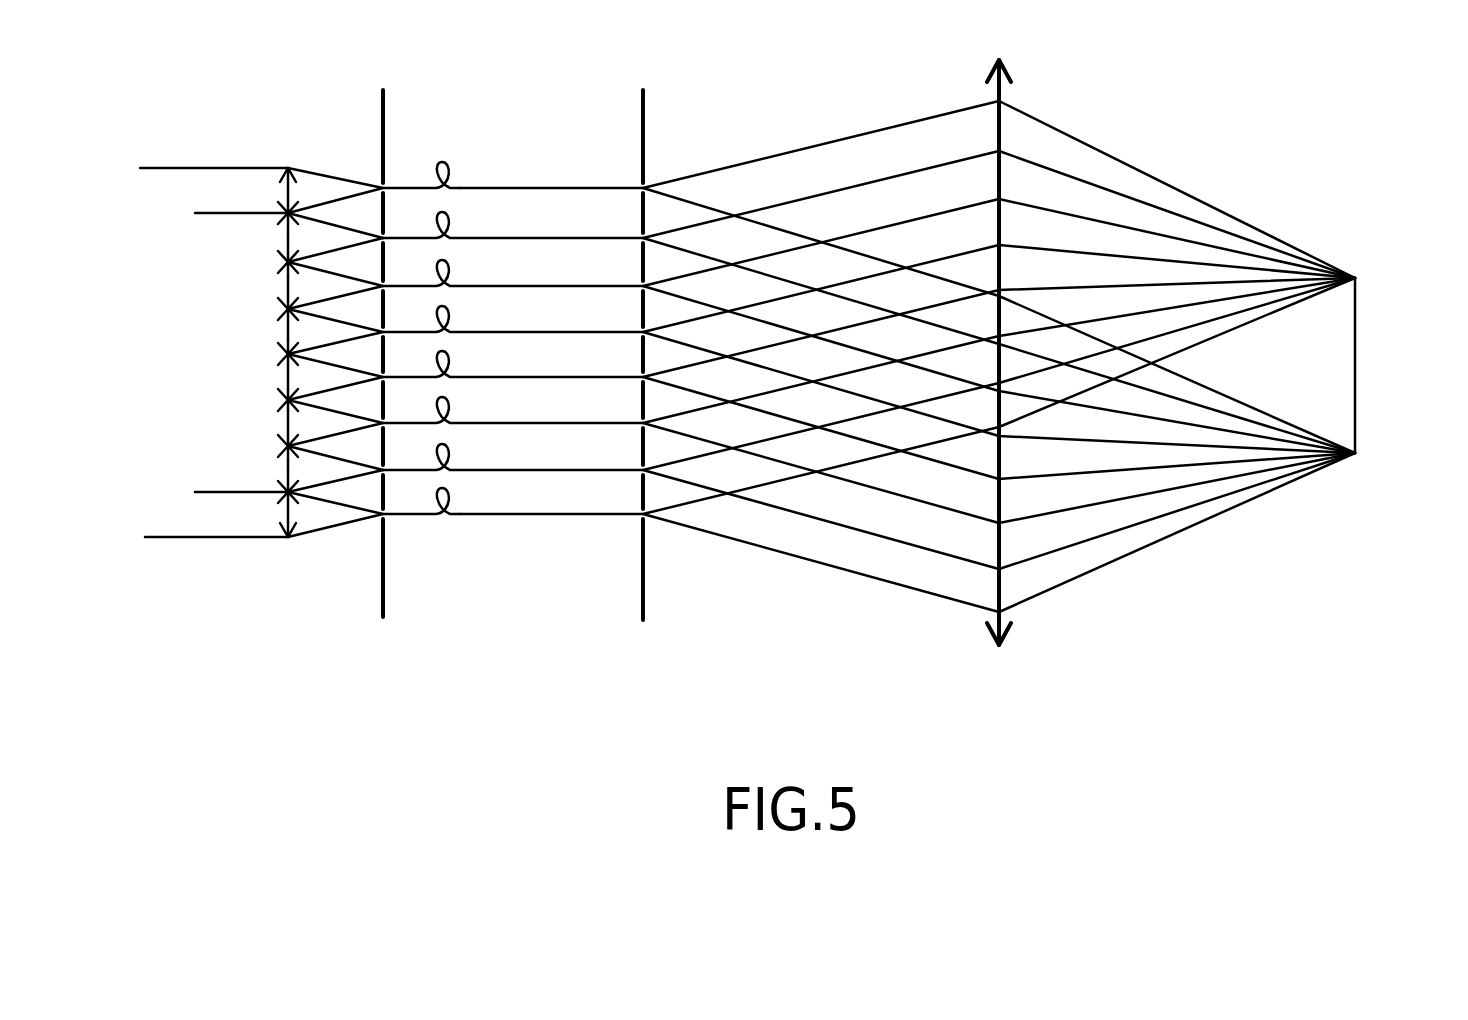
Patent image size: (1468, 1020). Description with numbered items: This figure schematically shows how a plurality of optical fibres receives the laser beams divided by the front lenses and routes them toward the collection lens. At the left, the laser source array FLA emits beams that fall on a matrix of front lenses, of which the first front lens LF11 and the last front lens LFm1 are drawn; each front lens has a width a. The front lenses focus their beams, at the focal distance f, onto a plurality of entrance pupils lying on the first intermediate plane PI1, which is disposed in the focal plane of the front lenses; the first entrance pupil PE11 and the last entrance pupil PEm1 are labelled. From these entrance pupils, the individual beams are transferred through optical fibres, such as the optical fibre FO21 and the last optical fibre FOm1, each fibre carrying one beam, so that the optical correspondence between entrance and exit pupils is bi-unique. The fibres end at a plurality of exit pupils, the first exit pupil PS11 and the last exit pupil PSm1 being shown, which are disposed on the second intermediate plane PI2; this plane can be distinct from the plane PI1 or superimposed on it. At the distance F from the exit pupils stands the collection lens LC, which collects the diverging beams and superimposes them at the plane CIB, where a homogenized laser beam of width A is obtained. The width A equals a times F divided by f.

The laser source array FLA is at (207, 542).
The first front lens LF11 is at (282, 178).
The last front lens LFm1 is at (290, 512).
The width of a front lens a is at (258, 350).
The focal distance f is at (323, 149).
The first intermediate plane PI1 is at (381, 92).
The second intermediate plane PI2 is at (642, 92).
The first entrance pupil PE11 is at (385, 188).
The first exit pupil PS11 is at (648, 188).
The optical fibre FO21 is at (512, 238).
The last entrance pupil PEm1 is at (386, 517).
The last optical fibre FOm1 is at (533, 516).
The last exit pupil PSm1 is at (648, 519).
The collection lens LC is at (1010, 72).
The distance between diaphragm and collection lens F is at (992, 128).
The target plane CIB is at (1357, 405).
The width of the homogenized laser beam A is at (1394, 335).